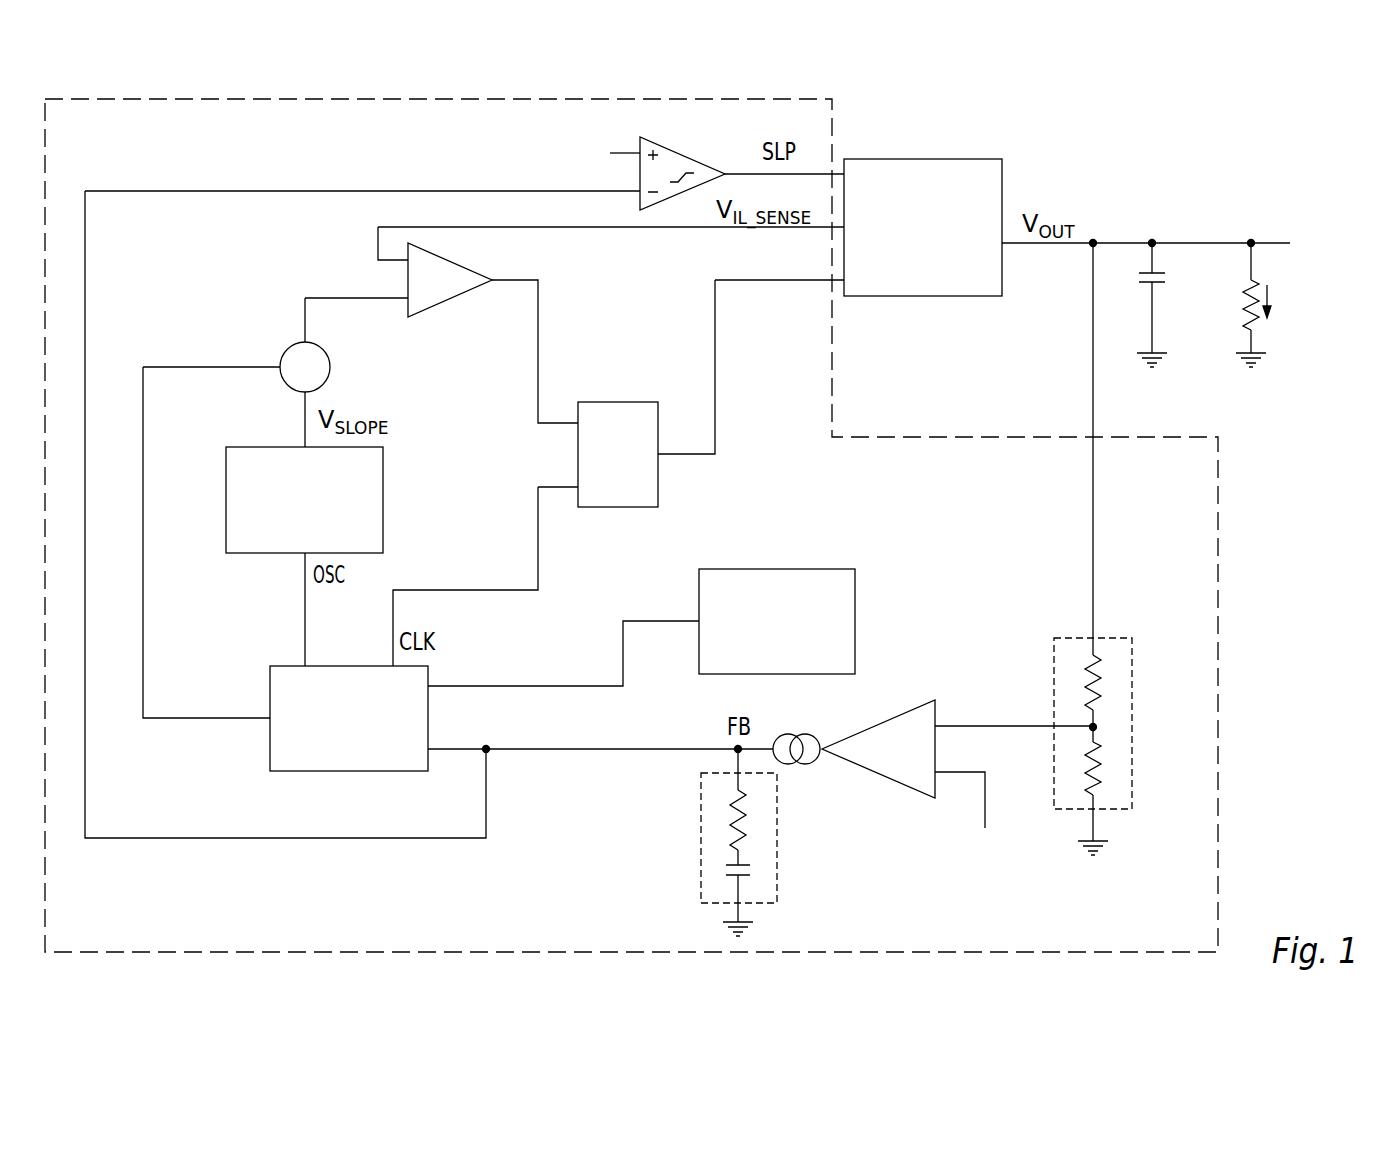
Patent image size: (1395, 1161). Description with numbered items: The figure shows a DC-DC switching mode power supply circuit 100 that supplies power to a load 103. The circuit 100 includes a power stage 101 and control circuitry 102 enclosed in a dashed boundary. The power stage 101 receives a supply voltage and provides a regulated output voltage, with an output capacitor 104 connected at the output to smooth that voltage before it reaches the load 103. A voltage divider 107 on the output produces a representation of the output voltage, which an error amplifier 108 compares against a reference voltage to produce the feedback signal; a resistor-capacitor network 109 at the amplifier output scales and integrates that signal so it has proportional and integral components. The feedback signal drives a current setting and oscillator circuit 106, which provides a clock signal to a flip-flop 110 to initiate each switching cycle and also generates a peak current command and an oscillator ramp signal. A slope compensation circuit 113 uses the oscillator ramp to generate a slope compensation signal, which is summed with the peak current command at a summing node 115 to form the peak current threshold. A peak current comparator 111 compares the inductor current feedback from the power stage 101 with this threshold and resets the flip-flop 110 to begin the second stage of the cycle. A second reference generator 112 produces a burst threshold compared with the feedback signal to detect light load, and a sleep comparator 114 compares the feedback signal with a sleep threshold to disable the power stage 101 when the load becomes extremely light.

The DC-DC switching mode power supply circuit 100 is at (1313, 96).
The power stage 101 is at (920, 159).
The control circuitry 102 is at (440, 98).
The load 103 is at (1247, 316).
The output capacitor 104 is at (1160, 279).
The current setting and oscillator circuit 106 is at (347, 772).
The voltage divider 107 is at (1133, 723).
The error amplifier 108 is at (858, 725).
The resistor-capacitor network 109 is at (778, 835).
The flip-flop 110 is at (615, 407).
The peak current comparator 111 is at (450, 300).
The second reference generator 112 is at (776, 569).
The slope compensation circuit 113 is at (226, 461).
The sleep comparator 114 is at (683, 154).
The summing node 115 is at (330, 368).